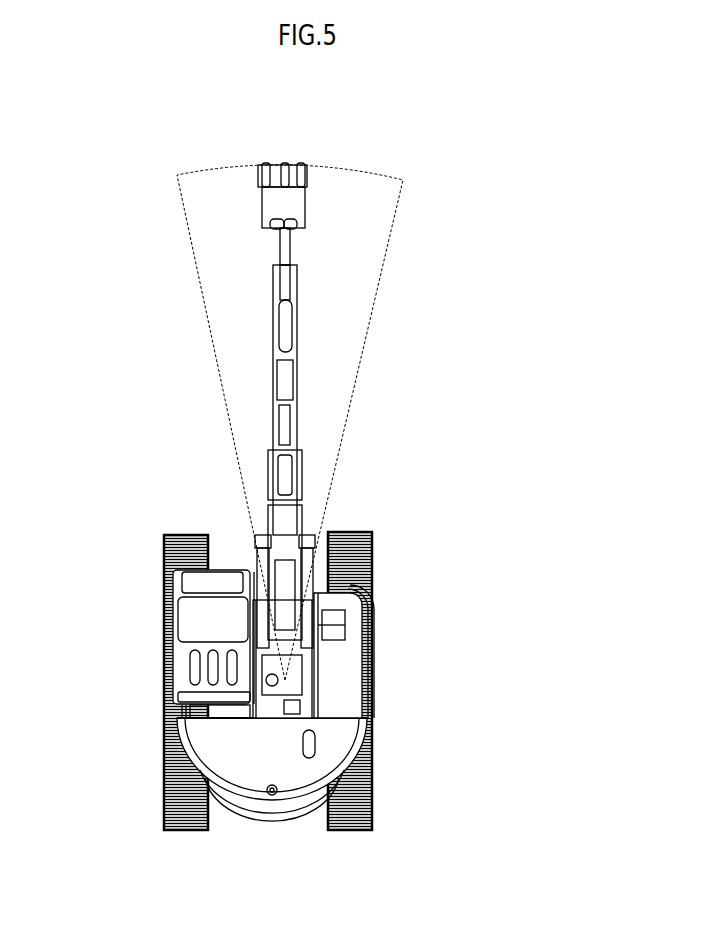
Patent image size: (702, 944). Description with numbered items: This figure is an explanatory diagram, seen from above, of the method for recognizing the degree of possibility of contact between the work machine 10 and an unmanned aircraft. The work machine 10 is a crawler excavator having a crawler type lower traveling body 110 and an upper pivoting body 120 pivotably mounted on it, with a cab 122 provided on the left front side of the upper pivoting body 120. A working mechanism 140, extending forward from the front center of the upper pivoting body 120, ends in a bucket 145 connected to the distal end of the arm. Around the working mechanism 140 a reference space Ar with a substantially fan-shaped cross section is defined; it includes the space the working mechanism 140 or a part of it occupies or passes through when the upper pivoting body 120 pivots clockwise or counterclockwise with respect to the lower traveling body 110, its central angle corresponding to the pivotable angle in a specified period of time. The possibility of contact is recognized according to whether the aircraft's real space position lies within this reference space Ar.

The work machine 10 is at (309, 445).
The lower traveling body 110 is at (146, 536).
The upper pivoting body 120 is at (146, 733).
The cab 122 is at (153, 613).
The working mechanism 140 is at (347, 382).
The bucket 145 is at (266, 158).
The reference space Ar is at (357, 176).